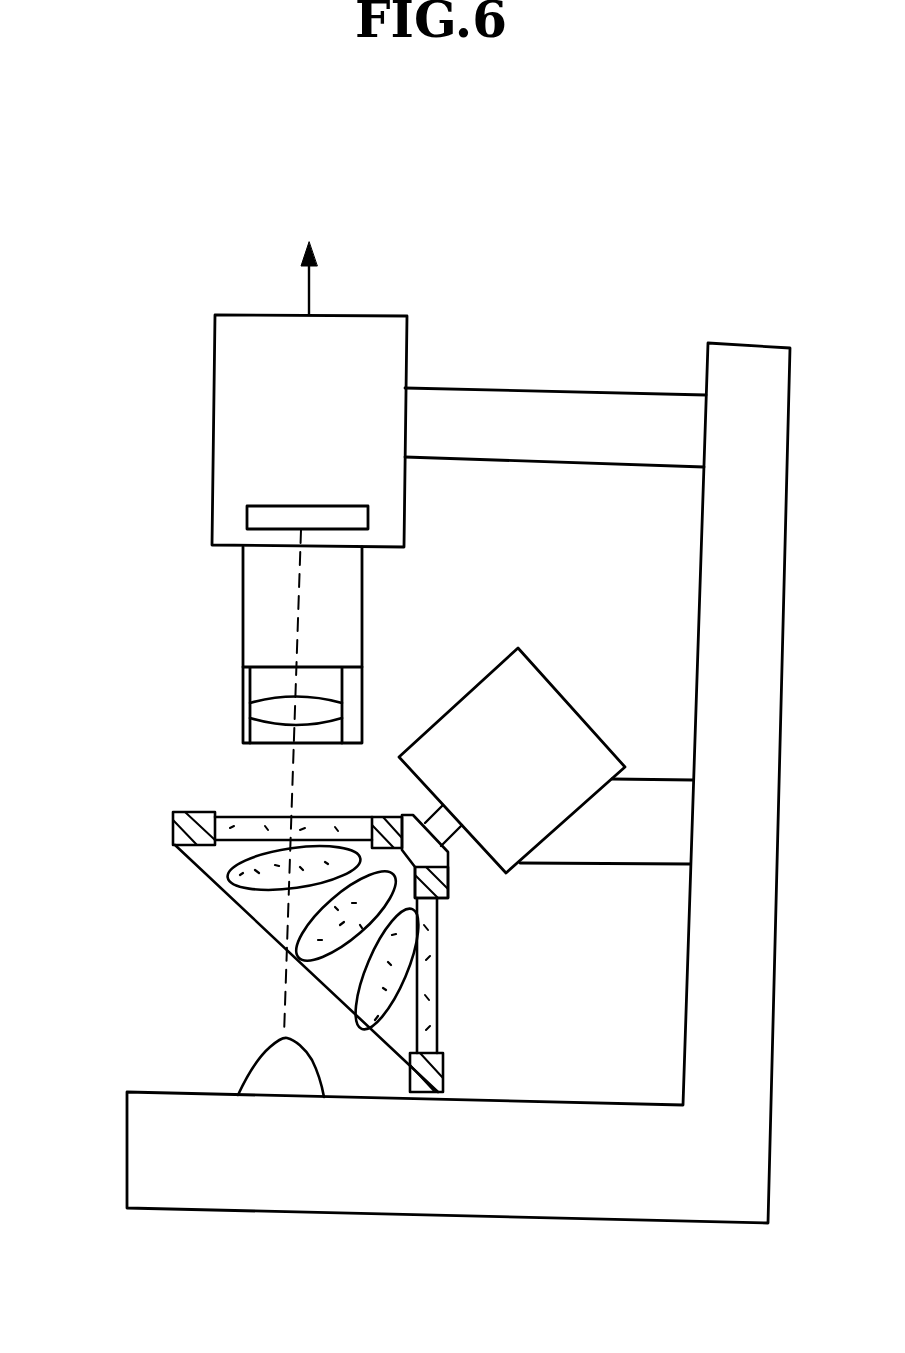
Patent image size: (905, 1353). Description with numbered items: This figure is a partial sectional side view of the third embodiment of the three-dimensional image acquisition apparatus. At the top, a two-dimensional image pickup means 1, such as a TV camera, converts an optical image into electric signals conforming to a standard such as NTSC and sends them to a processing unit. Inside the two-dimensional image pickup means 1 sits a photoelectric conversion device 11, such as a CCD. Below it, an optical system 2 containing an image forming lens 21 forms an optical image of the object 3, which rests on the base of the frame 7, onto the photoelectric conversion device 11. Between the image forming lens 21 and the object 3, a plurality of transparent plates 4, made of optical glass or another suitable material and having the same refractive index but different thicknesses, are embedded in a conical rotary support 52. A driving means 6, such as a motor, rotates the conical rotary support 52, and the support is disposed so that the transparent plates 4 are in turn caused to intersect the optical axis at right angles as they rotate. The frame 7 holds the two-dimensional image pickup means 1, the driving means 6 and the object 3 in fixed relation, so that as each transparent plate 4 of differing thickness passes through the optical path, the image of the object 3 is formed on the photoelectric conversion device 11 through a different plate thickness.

The two-dimensional image pickup means 1 is at (253, 332).
The photoelectric conversion device 11 is at (260, 518).
The optical system 2 is at (240, 628).
The image forming lens 21 is at (263, 715).
The object 3 is at (262, 1072).
The transparent plates 4 is at (323, 828).
The conical rotary support 52 is at (448, 885).
The driving means 6 is at (543, 702).
The frame 7 is at (615, 1202).